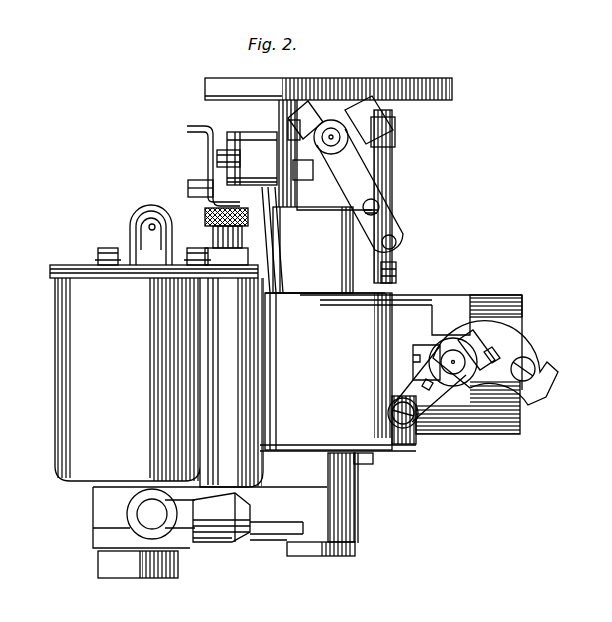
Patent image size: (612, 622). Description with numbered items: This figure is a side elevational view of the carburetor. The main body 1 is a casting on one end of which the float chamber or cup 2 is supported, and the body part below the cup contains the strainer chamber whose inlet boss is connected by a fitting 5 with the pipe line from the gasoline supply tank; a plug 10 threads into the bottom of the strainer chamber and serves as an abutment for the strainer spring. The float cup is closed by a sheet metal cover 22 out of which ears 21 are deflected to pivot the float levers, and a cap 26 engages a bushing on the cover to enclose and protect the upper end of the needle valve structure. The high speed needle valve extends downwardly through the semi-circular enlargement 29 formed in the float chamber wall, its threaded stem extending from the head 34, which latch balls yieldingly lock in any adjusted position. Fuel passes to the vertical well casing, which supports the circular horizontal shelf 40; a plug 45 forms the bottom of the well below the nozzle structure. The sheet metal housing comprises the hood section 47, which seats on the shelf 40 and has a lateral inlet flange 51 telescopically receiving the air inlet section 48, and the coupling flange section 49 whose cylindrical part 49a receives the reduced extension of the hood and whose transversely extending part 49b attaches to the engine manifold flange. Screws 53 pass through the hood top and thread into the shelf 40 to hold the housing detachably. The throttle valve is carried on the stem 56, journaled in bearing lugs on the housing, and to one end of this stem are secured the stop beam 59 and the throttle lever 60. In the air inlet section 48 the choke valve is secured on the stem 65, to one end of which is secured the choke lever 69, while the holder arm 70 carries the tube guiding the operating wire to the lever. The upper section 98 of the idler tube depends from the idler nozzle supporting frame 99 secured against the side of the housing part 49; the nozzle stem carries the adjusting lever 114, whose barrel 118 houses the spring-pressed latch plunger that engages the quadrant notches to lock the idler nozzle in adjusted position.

The main body 1 is at (265, 514).
The float chamber 2 is at (63, 331).
The fitting 5 is at (186, 524).
The plug 10 is at (133, 566).
The ears 21 is at (150, 227).
The float cup cover 22 is at (70, 265).
The cap 26 is at (153, 224).
The semi-circular enlargement 29 is at (227, 396).
The head 34 is at (222, 232).
The circular horizontal shelf 40 is at (404, 452).
The plug 45 is at (340, 556).
The hood section 47 is at (376, 455).
The air inlet section 48 is at (493, 300).
The coupling flange section 49 is at (386, 148).
The cylindrical part 49a is at (392, 165).
The transversely extending part 49b is at (453, 93).
The lateral inlet flange 51 is at (416, 294).
The screws 53 is at (396, 268).
The stem 56 is at (333, 118).
The stop beam 59 is at (356, 110).
The throttle lever 60 is at (389, 222).
The stem 65 is at (460, 370).
The choke lever 69 is at (440, 405).
The holder arm 70 is at (513, 354).
The upper section of idler tube structure 98 is at (280, 253).
The idler nozzle supporting frame 99 is at (252, 135).
The adjusting lever 114 is at (187, 129).
The barrel 118 is at (193, 183).